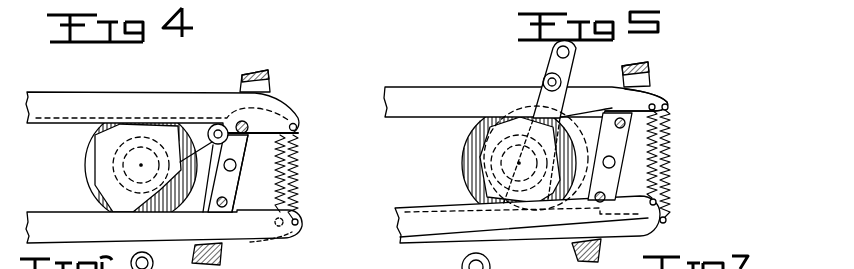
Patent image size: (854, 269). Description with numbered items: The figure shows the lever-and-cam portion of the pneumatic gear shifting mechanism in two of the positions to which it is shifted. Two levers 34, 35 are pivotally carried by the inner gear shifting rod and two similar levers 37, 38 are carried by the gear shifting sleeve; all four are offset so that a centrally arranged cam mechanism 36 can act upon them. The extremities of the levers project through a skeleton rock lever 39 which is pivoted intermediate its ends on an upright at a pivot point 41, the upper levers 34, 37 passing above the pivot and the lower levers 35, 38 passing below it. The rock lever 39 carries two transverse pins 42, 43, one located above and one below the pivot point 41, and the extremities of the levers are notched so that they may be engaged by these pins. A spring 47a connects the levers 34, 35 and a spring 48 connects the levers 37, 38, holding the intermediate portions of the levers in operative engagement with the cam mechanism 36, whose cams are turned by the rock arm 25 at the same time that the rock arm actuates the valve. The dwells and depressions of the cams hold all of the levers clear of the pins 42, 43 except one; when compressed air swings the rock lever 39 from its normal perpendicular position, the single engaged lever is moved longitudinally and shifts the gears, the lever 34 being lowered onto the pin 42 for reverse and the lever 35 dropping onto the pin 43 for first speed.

In FIG. 4, the rock arm 25 is at (234, 167).
In FIG. 5, the rock arm 25 is at (543, 70).
In FIG. 4, the lever 34 is at (296, 118).
In FIG. 5, the lever 34 is at (526, 102).
In FIG. 4, the lever 35 is at (164, 226).
In FIG. 5, the lever 35 is at (690, 232).
In FIG. 4, the cam mechanism 36 is at (115, 187).
In FIG. 5, the cam mechanism 36 is at (488, 175).
In FIG. 4, the lever 37 is at (190, 93).
In FIG. 5, the lever 37 is at (666, 104).
In FIG. 4, the lever 38 is at (298, 238).
In FIG. 5, the lever 38 is at (630, 235).
In FIG. 4, the skeleton rock lever 39 is at (223, 257).
In FIG. 5, the skeleton rock lever 39 is at (646, 83).
In FIG. 4, the pivot point 41 is at (240, 180).
In FIG. 5, the pivot point 41 is at (614, 160).
In FIG. 4, the transverse pin 42 is at (247, 125).
In FIG. 5, the transverse pin 42 is at (616, 123).
In FIG. 4, the transverse pin 43 is at (228, 202).
In FIG. 5, the transverse pin 43 is at (603, 194).
In FIG. 4, the spring 47a is at (278, 174).
In FIG. 5, the spring 47a is at (662, 155).
In FIG. 4, the spring 48 is at (291, 148).
In FIG. 5, the spring 48 is at (662, 177).